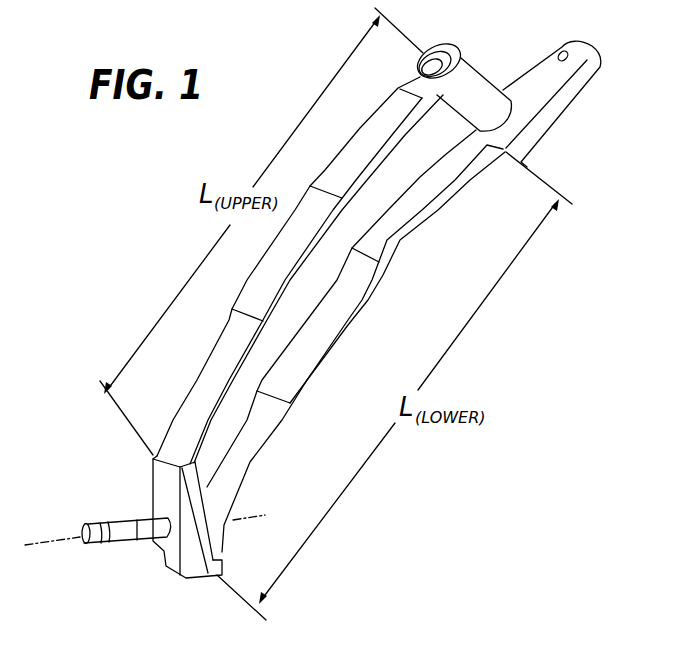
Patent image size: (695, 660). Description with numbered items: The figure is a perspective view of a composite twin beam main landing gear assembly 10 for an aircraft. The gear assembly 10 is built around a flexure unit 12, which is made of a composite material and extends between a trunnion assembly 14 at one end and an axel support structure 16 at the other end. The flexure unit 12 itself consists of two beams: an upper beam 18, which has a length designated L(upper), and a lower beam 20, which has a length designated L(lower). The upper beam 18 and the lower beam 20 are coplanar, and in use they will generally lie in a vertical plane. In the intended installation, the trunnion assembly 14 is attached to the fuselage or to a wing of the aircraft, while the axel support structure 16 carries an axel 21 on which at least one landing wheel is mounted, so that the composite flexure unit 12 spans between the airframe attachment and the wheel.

The composite twin beam main landing gear assembly 10 is at (108, 242).
The flexure unit 12 is at (330, 245).
The trunnion assembly 14 is at (470, 90).
The axel support structure 16 is at (184, 578).
The upper beam 18 is at (199, 378).
The lower beam 20 is at (320, 320).
The axel 21 is at (128, 535).